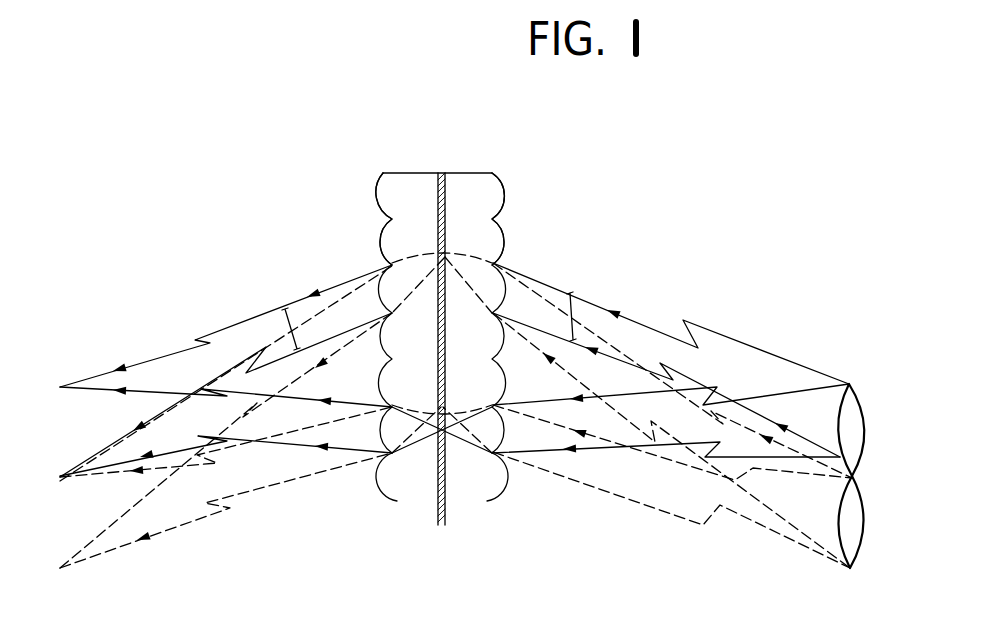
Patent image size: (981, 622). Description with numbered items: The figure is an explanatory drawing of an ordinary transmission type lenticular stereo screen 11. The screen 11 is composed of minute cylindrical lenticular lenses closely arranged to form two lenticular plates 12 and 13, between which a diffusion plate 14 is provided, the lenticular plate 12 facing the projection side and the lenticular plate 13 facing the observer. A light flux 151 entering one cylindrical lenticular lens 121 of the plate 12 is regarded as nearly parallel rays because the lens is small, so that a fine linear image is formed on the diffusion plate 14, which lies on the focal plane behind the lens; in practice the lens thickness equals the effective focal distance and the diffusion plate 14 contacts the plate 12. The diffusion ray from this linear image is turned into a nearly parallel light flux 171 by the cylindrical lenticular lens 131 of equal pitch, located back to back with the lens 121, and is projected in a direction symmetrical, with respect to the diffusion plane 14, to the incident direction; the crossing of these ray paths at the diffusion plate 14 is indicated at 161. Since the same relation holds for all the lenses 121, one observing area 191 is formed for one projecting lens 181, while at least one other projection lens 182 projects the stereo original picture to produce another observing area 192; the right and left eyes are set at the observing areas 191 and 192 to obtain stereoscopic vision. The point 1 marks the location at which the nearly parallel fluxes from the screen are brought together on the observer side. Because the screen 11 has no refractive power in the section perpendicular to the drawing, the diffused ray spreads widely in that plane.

The object point 1 is at (221, 336).
The transmission type lenticular stereo screen 11 is at (505, 113).
The lenticular plate 12 is at (476, 187).
The lenticular plate 13 is at (405, 178).
The diffusion plate 14 is at (441, 172).
The cylindrical lenticular lens 121 is at (494, 193).
The cylindrical lenticular lens 131 is at (388, 193).
The crossing point of rays 161 is at (446, 257).
The light flux 171 is at (290, 327).
The light flux 151 is at (569, 316).
The projecting lens 181 is at (850, 403).
The projection lens 182 is at (857, 548).
The observing area 191 is at (214, 373).
The observing area 192 is at (214, 440).